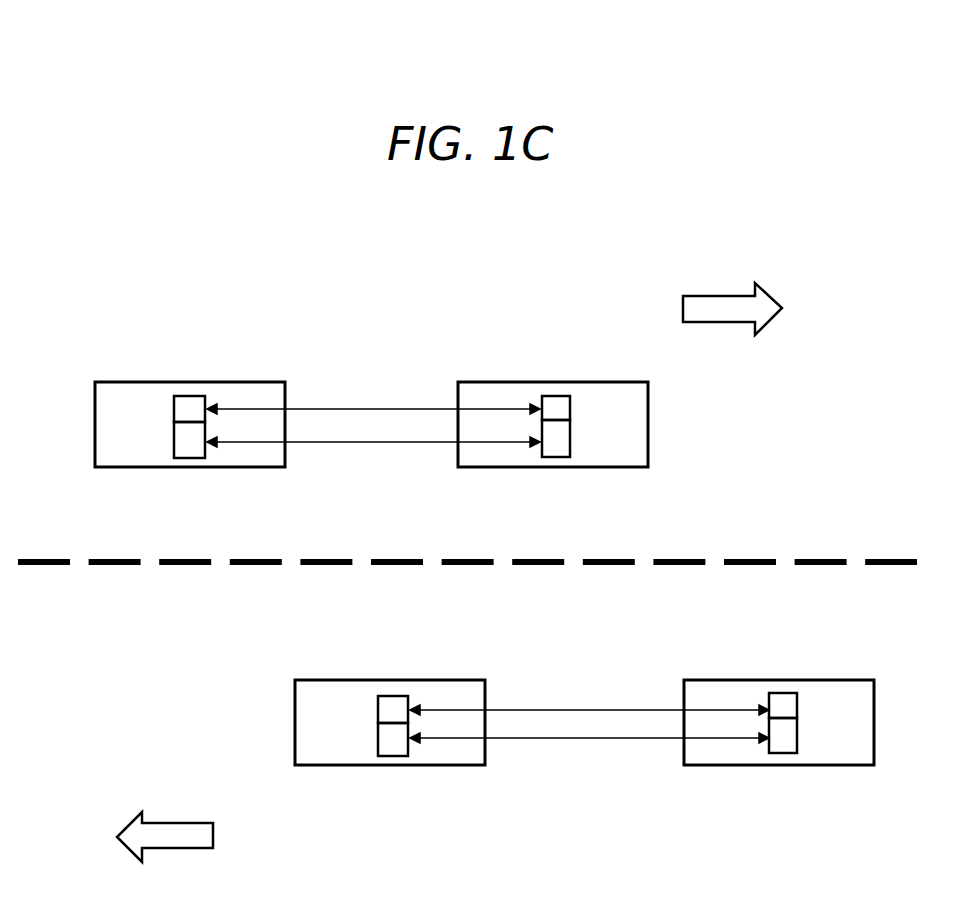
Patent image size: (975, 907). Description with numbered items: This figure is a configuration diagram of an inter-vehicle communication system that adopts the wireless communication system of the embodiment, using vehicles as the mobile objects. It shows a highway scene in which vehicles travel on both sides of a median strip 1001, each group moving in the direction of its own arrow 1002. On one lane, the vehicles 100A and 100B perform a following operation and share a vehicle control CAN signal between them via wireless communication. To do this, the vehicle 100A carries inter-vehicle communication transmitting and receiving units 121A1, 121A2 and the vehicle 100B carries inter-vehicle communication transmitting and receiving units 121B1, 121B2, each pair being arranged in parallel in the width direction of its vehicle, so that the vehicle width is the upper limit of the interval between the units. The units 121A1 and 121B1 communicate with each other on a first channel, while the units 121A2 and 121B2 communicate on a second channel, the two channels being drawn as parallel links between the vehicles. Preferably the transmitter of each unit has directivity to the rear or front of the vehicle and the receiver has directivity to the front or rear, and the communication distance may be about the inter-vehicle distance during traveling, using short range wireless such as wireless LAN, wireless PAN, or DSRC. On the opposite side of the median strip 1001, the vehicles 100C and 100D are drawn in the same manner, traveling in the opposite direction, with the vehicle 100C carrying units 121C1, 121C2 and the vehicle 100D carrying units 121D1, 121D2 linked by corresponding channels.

The vehicle 100A is at (312, 680).
The vehicle 100B is at (830, 680).
The device C 100C is at (490, 382).
The device D 100D is at (272, 382).
The inter-vehicle communication transmitting and receiving unit 121A1 is at (395, 707).
The inter-vehicle communication transmitting and receiving unit 121A2 is at (390, 753).
The inter-vehicle communication transmitting and receiving unit 121B1 is at (777, 698).
The inter-vehicle communication transmitting and receiving unit 121B2 is at (782, 747).
The first transceiver of device C 121C1 is at (557, 405).
The second transceiver of device C 121C2 is at (553, 442).
The first transceiver of device D 121D1 is at (187, 407).
The second transceiver of device D 121D2 is at (193, 445).
The median strip 1001 is at (745, 560).
The arrow 1002 is at (707, 296).